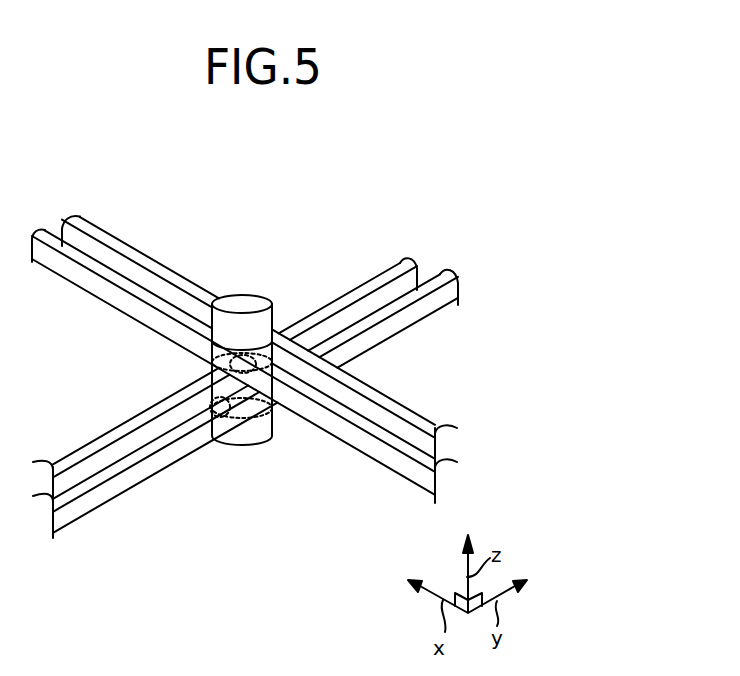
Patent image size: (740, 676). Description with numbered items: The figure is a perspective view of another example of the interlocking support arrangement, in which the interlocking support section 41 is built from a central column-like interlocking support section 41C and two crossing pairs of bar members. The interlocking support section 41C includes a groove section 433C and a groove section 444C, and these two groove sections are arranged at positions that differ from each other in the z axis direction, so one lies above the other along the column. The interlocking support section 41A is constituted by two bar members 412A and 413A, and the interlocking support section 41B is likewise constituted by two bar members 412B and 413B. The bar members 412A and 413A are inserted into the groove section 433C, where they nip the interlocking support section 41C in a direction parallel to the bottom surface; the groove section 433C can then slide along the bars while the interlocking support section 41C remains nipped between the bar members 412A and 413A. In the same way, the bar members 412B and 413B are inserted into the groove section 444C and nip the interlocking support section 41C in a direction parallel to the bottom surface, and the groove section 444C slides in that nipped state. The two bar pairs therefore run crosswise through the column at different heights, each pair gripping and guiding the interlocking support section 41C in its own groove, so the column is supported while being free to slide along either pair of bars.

The interlocking support section 41 is at (245, 447).
The interlocking support section 41C is at (243, 300).
The interlocking support section 41A is at (344, 372).
The bar member 412A is at (387, 275).
The bar member 413A is at (440, 306).
The interlocking support section 41B is at (340, 372).
The bar member 412B is at (430, 411).
The bar member 413B is at (387, 457).
The groove section 444C is at (262, 352).
The groove section 433C is at (218, 398).